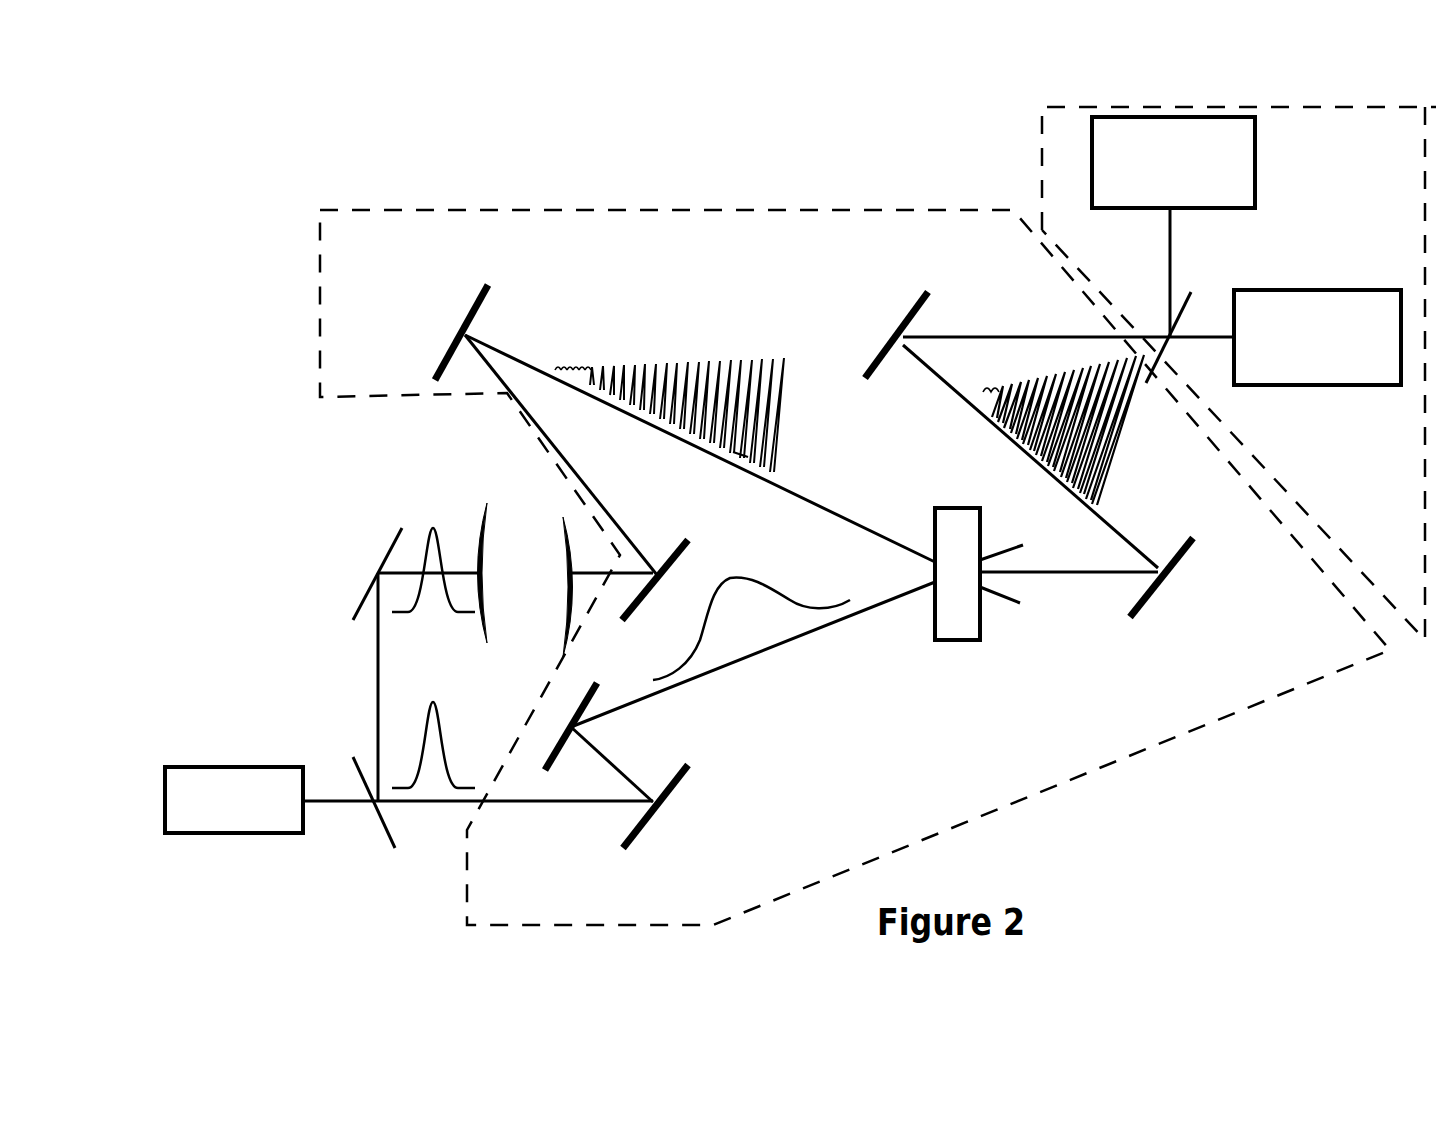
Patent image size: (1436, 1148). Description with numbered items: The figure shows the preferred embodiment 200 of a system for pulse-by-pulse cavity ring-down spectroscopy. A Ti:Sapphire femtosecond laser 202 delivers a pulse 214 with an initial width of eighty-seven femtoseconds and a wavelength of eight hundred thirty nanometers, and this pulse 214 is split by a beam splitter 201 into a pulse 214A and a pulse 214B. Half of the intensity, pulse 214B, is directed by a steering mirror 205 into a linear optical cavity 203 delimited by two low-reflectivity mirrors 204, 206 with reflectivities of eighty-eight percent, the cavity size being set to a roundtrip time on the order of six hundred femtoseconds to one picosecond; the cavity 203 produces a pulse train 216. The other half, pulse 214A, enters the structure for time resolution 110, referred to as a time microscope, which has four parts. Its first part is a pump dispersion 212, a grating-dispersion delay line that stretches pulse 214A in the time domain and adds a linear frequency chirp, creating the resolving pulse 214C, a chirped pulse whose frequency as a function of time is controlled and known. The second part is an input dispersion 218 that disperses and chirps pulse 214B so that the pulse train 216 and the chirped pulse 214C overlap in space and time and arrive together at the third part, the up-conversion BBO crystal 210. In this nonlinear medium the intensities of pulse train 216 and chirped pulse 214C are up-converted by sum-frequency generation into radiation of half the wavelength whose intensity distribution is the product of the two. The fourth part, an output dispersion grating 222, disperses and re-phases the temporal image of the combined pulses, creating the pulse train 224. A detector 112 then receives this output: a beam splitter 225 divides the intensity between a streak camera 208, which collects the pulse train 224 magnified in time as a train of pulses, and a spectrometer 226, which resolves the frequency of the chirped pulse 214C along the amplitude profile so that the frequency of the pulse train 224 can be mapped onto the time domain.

The preferred embodiment 200 is at (288, 97).
The structure for time resolution 110 is at (1140, 755).
The detector 112 is at (1038, 135).
The beam splitter 201 is at (355, 760).
The Ti:Sapphire femtosecond laser 202 is at (225, 766).
The linear optical cavity 203 is at (485, 576).
The low-reflectivity mirror 204 is at (477, 536).
The steering mirror 205 is at (363, 597).
The low-reflectivity mirror 206 is at (563, 553).
The streak camera 208 is at (1255, 152).
The up-conversion BBO crystal 210 is at (943, 507).
The pump dispersion 212 is at (600, 703).
The pulse 214 is at (342, 803).
The pulse 214A is at (404, 745).
The pulse 214B is at (417, 533).
The resolving pulse 214C is at (800, 601).
The pulse train 216 is at (748, 373).
The input dispersion 218 is at (463, 317).
The output dispersion grating 222 is at (907, 312).
The pulse train 224 is at (1110, 512).
The beam splitter 225 is at (1163, 353).
The spectrometer 226 is at (1389, 385).